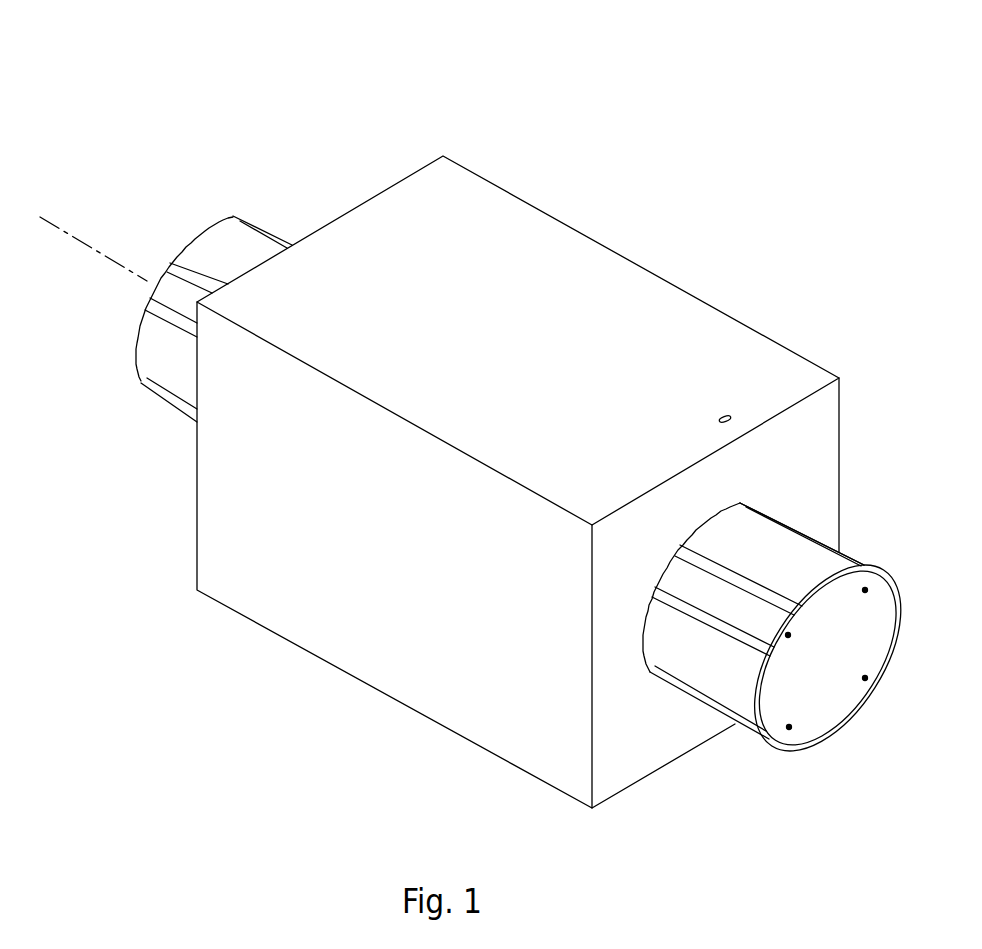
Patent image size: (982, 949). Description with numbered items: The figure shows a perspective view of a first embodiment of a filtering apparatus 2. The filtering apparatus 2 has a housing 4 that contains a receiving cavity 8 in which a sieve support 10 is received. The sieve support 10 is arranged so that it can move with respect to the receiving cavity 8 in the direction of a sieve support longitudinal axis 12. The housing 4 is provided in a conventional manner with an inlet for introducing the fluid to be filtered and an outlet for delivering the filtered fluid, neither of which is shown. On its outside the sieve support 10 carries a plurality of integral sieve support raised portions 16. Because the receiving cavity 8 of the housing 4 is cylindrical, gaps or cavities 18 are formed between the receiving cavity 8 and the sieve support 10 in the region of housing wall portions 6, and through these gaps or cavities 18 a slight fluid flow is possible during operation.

The filtering apparatus 2 is at (167, 111).
The housing 4 is at (514, 296).
The housing wall portions 6 is at (720, 500).
The receiving cavity 8 is at (788, 505).
The sieve support 10 is at (117, 327).
The sieve support longitudinal axis 12 is at (75, 233).
The sieve support raised portions 16 is at (272, 220).
The gaps or cavities 18 is at (662, 594).